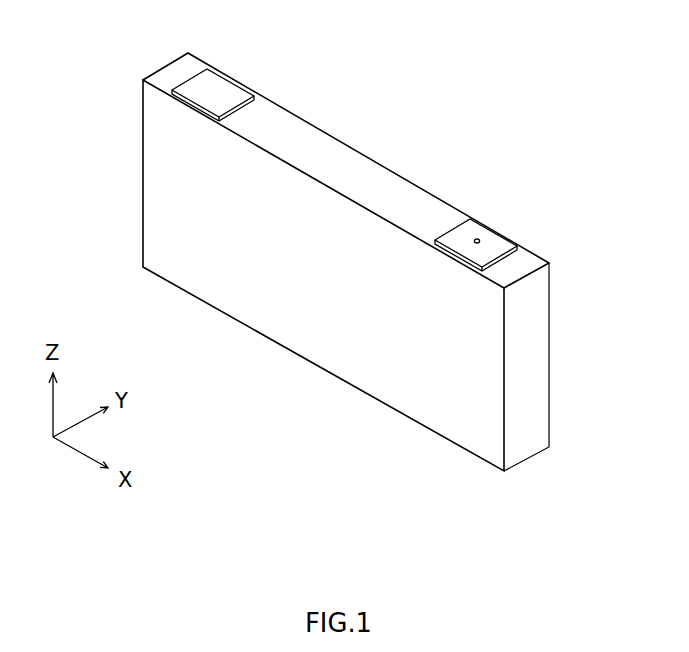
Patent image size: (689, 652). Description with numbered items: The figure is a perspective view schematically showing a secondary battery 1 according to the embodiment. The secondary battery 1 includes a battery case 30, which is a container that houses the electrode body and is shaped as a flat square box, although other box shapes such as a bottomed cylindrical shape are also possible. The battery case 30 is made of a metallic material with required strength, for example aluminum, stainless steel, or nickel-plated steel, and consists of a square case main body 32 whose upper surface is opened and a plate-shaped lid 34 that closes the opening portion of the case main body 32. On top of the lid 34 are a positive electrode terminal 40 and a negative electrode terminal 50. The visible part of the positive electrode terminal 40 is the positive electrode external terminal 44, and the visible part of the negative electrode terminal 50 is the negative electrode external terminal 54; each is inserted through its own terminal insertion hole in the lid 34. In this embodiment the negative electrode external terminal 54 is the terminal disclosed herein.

The secondary battery 1 is at (395, 248).
The battery case 30 is at (395, 249).
The case main body 32 is at (238, 300).
The lid 34 is at (345, 157).
The positive electrode terminal 40 is at (238, 74).
The positive electrode external terminal 44 is at (217, 87).
The negative electrode terminal 50 is at (505, 225).
The negative electrode external terminal 54 is at (480, 238).